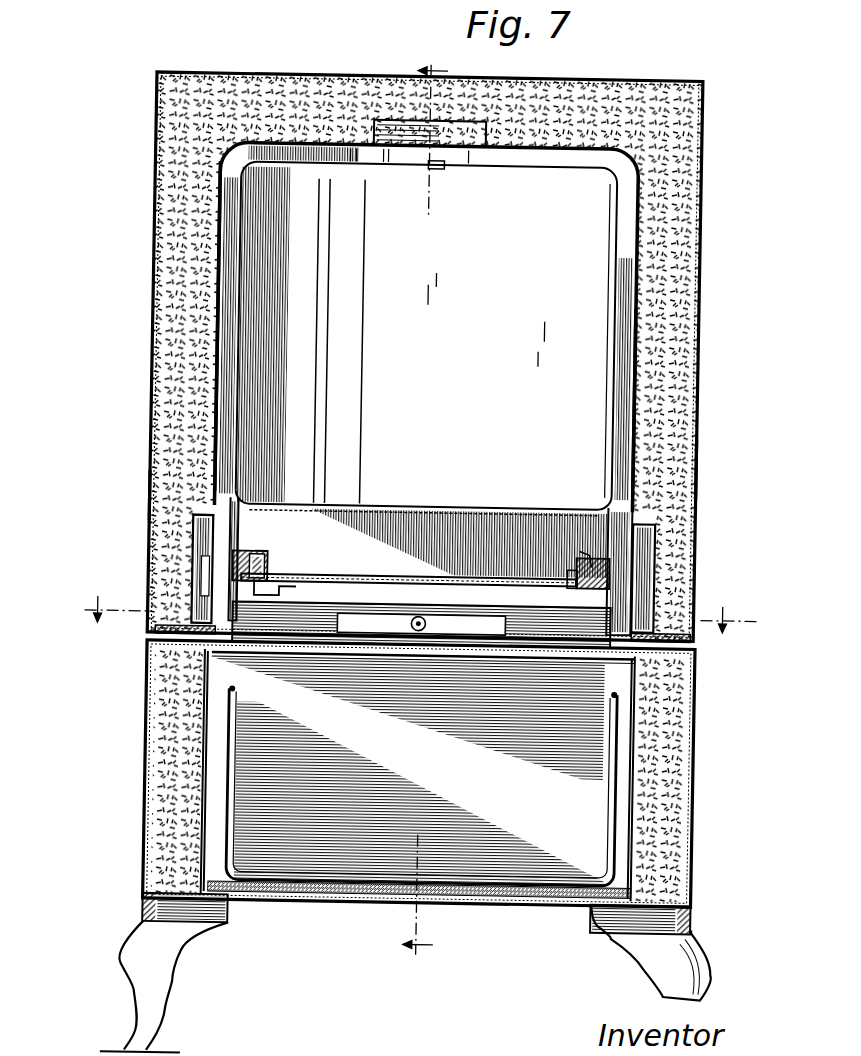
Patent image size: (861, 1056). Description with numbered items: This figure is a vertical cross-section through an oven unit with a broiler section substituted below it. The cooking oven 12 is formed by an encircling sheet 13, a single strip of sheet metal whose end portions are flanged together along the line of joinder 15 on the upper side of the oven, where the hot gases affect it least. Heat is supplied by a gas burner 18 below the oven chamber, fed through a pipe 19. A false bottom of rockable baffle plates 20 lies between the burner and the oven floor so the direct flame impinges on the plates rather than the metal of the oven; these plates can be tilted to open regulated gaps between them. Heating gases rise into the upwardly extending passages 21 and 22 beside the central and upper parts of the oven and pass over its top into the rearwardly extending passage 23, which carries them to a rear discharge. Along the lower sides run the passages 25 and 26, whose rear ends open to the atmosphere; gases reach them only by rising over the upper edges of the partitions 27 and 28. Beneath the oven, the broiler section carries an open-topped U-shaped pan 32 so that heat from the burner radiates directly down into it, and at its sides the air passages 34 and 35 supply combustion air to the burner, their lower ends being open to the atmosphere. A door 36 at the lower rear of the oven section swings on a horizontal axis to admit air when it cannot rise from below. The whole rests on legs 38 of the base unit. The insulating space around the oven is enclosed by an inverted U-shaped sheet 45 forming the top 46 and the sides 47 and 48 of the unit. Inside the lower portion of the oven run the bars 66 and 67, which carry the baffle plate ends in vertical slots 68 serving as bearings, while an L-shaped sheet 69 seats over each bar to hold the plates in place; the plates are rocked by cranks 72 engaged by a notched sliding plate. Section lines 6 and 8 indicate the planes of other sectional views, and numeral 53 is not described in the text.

The section line 6- 6 is at (408, 619).
The section line 8- 8 is at (425, 511).
The cooking oven 12 is at (578, 341).
The encircling sheet 13 is at (623, 274).
The line of joinder 15 is at (436, 165).
The gas burner 18 is at (454, 604).
The pipe 19 is at (435, 631).
The baffle plates 20 is at (371, 569).
The upwardly extending passage 21 is at (272, 141).
The upwardly extending passage 22 is at (538, 150).
The rearwardly extending passage 23 is at (392, 116).
The side passage 25 is at (200, 567).
The side passage 26 is at (653, 551).
The partition 27 is at (219, 477).
The partition 28 is at (632, 489).
The U-shaped pan 32 is at (248, 830).
The air passage 34 is at (228, 807).
The air passage 35 is at (628, 792).
The door 36 is at (652, 614).
The legs 38 is at (165, 957).
The inverted U-shaped sheet 45 is at (152, 293).
The top 46 is at (626, 78).
The side 47 is at (157, 490).
The side 48 is at (707, 460).
The cooling unit 53 is at (222, 256).
The bar 66 is at (228, 554).
The bar 67 is at (588, 550).
The vertical slots 68 is at (283, 553).
The L-shaped sheet 69 is at (263, 546).
The cranks 72 is at (279, 588).